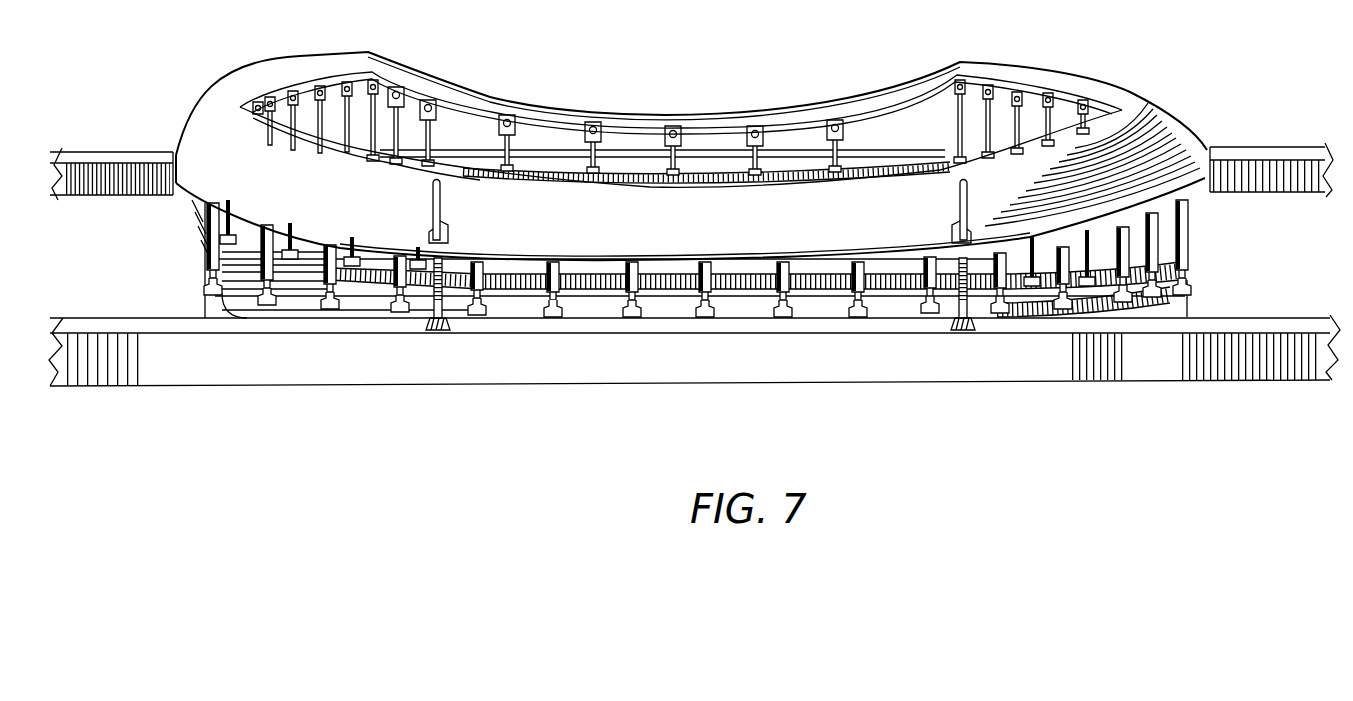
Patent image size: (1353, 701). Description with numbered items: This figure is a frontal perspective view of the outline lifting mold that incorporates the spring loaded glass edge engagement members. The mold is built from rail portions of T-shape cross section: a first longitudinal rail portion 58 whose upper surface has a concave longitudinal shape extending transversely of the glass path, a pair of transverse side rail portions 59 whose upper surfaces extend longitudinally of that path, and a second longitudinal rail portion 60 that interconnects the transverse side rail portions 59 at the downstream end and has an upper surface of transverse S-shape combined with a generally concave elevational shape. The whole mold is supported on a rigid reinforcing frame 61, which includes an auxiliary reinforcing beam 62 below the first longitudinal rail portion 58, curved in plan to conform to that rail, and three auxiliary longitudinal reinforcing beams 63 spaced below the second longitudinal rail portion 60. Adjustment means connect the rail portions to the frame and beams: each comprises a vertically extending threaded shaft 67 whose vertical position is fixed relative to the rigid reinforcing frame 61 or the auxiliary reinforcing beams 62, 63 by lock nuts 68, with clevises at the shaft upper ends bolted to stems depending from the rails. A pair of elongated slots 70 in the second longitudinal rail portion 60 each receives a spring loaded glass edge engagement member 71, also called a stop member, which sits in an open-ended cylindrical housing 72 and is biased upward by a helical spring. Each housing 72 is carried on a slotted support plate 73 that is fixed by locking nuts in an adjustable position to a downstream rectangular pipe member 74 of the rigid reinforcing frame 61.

The first longitudinal rail portion 58 is at (527, 110).
The transverse side rail portions 59 is at (323, 70).
The second longitudinal rail portion 60 is at (677, 231).
The rigid reinforcing frame 61 is at (773, 393).
The auxiliary reinforcing beam 62 is at (721, 170).
The auxiliary longitudinal reinforcing beams 63 is at (307, 263).
The vertically extending threaded shaft 67 is at (560, 297).
The lock nuts 68 is at (560, 313).
The elongated slots 70 is at (448, 232).
The spring loaded glass edge engagement members 71 is at (431, 188).
The open-ended cylindrical housing 72 is at (433, 297).
The slotted support plate 73 is at (448, 331).
The downstream rectangular pipe member 74 is at (647, 381).